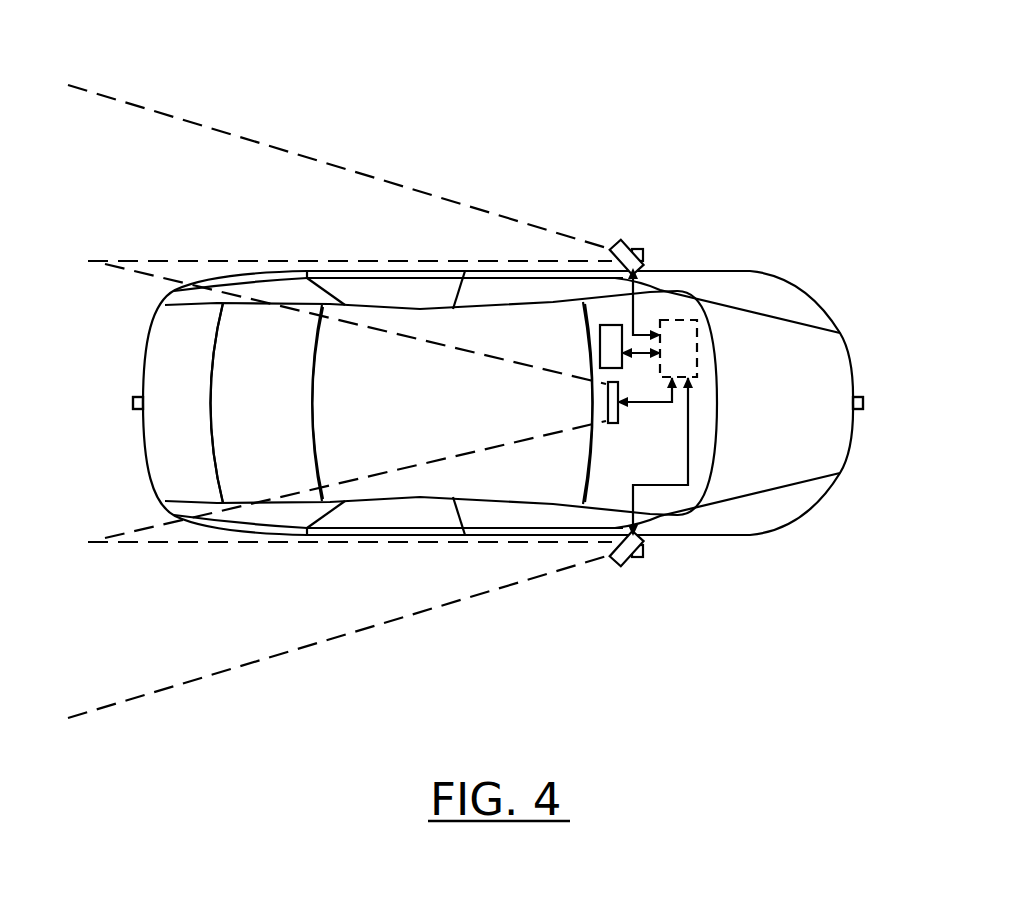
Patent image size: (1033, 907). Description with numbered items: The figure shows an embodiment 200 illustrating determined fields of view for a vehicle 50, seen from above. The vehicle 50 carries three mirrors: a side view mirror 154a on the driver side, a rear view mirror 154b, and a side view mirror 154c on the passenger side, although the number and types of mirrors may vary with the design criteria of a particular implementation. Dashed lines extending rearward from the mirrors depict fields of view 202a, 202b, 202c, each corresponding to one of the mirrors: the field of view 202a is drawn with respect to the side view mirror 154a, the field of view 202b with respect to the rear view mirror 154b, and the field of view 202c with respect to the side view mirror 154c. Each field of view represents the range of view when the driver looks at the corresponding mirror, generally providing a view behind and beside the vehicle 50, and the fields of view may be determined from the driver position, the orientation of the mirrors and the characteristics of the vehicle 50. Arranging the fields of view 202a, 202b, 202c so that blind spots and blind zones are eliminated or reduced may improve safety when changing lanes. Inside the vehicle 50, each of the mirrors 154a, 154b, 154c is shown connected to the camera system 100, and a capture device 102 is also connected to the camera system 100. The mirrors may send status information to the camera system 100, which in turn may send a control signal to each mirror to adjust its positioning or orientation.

The vehicle 50 is at (773, 272).
The camera system 100 is at (700, 355).
The capture device 102 is at (597, 328).
The side view mirror 154a is at (622, 243).
The rear view mirror 154b is at (613, 426).
The side view mirror 154c is at (622, 561).
The embodiment 200 is at (336, 365).
The field of view 202a is at (172, 115).
The field of view 202b is at (147, 527).
The field of view 202c is at (175, 685).